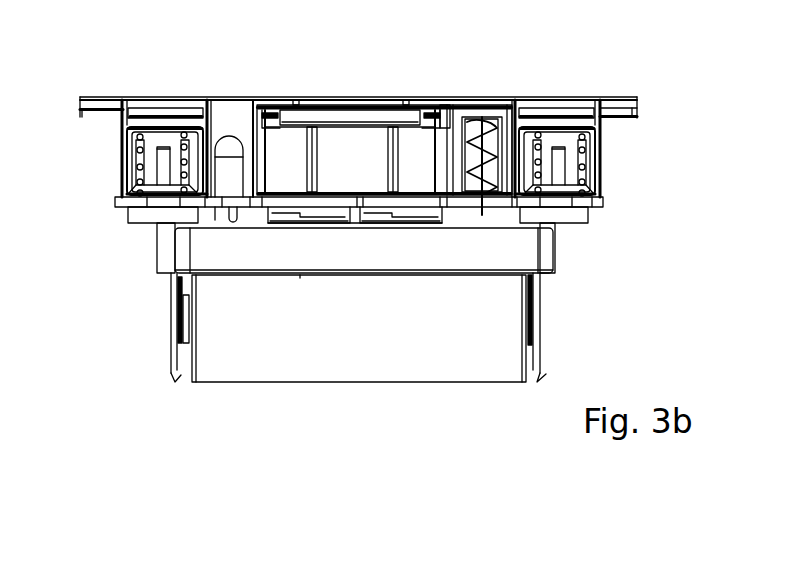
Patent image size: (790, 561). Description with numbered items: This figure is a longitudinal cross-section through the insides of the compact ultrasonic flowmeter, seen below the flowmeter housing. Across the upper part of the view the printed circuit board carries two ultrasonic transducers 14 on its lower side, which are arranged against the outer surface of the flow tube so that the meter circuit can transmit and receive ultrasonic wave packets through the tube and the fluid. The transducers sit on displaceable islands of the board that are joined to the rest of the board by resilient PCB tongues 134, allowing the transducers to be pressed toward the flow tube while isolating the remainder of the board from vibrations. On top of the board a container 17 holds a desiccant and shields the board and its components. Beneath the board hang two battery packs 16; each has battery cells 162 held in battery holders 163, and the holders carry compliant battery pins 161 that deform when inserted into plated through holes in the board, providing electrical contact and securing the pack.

The tongues 134 is at (252, 200).
The container 17 is at (595, 165).
The ultrasonic transducers 14 is at (152, 215).
The battery packs 16 is at (178, 262).
The battery pins 161 is at (175, 305).
The battery cells 162 is at (410, 372).
The battery holders 163 is at (300, 250).